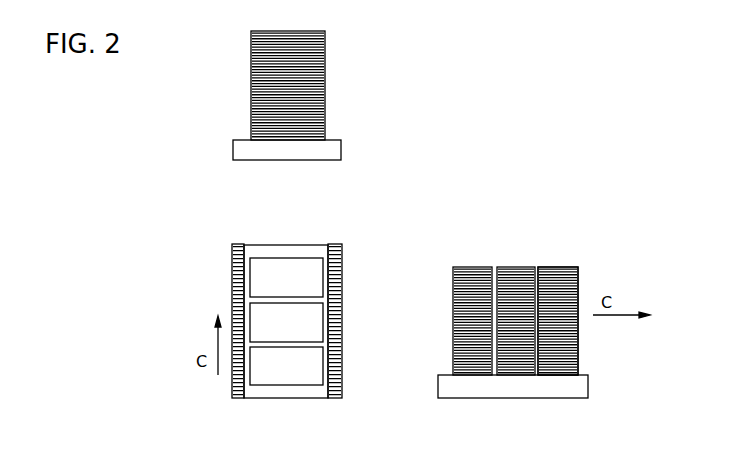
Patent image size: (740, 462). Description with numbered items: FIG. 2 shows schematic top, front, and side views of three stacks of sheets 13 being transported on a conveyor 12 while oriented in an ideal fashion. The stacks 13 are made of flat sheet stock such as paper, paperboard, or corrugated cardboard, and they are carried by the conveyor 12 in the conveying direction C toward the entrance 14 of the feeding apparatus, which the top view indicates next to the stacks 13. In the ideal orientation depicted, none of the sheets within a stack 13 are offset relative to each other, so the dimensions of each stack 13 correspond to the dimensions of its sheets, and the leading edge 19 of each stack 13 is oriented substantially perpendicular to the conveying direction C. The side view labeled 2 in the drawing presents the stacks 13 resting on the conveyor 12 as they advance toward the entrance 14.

The heat sink assembly base 2 is at (245, 150).
The conveyor 12 is at (232, 391).
The stacks of sheets 13 is at (327, 54).
The entrance 14 is at (312, 258).
The leading edge 19 is at (578, 290).